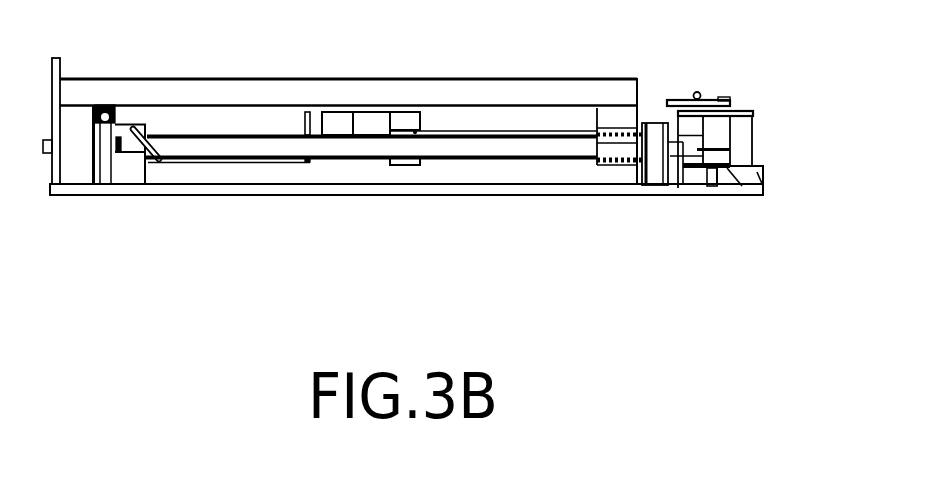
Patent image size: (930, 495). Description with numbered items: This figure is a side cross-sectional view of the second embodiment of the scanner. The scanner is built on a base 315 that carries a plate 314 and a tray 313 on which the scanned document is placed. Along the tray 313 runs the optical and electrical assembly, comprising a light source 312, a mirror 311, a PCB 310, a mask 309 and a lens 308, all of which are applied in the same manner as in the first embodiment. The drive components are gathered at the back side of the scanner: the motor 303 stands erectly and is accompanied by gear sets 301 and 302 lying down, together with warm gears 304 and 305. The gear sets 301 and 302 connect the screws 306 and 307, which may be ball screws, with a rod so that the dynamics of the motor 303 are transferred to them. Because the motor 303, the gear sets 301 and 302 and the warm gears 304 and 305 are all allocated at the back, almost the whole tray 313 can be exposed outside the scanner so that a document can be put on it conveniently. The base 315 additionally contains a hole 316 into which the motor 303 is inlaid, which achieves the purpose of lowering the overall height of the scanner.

The gear set 301 is at (732, 100).
The gear set 302 is at (753, 113).
The motor 303 is at (758, 128).
The warm gear 304 is at (730, 150).
The warm gear 305 is at (747, 184).
The screw 306 is at (678, 185).
The screw 307 is at (610, 168).
The lens 308 is at (342, 127).
The mask 309 is at (312, 160).
The PCB 310 is at (255, 163).
The mirror 311 is at (161, 161).
The light source 312 is at (97, 125).
The tray 313 is at (252, 92).
The plate 314 is at (60, 80).
The base 315 is at (757, 193).
The hole 316 is at (707, 193).